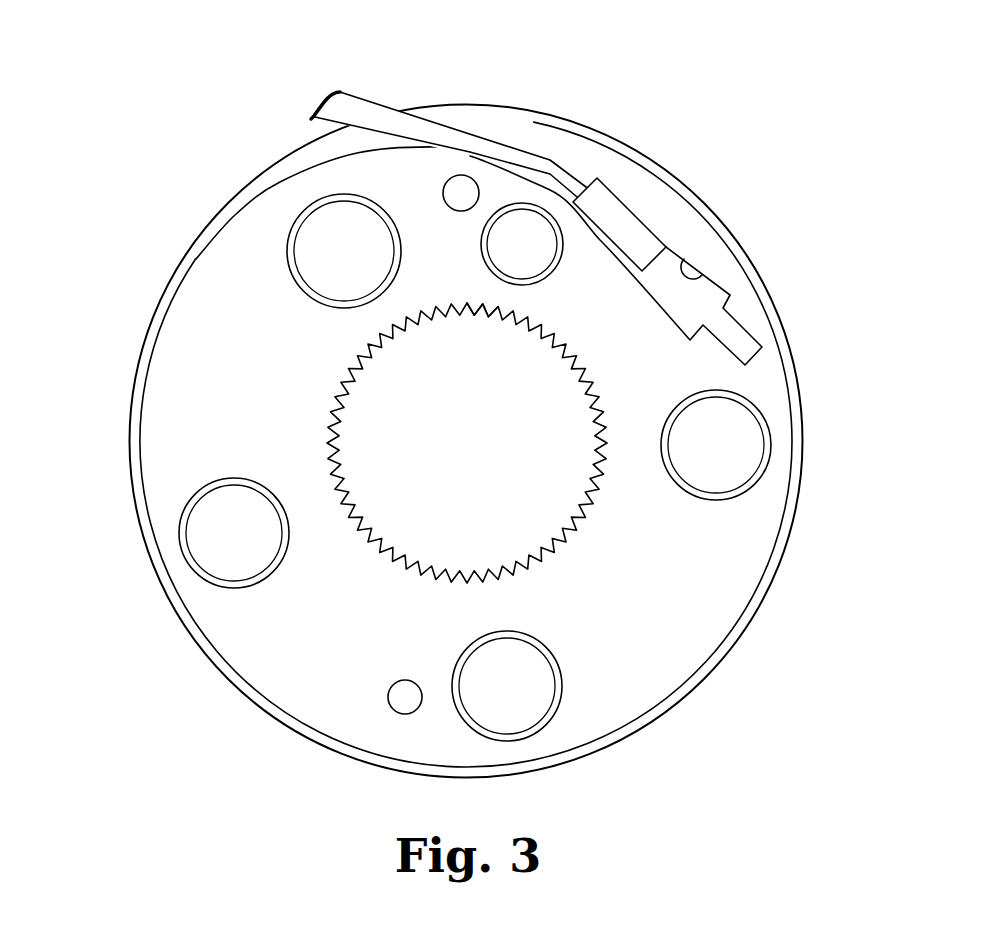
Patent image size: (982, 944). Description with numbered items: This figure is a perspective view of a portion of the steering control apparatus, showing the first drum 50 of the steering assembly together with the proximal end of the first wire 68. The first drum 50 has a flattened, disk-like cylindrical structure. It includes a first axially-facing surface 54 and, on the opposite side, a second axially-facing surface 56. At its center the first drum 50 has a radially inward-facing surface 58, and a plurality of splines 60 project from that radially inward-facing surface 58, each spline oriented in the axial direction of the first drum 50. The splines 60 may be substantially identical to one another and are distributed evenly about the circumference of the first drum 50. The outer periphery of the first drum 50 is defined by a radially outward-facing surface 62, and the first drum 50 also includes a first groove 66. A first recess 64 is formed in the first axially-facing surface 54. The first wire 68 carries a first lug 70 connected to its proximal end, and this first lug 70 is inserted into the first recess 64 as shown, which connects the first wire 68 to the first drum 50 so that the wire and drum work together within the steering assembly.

The first drum 50 is at (802, 375).
The first axially-facing surface 54 is at (205, 288).
The second axially-facing surface 56 is at (132, 386).
The radially inward-facing surface 58 is at (379, 340).
The splines 60 is at (568, 531).
The radially outward-facing surface 62 is at (258, 700).
The first recess 64 is at (701, 275).
The first groove 66 is at (282, 183).
The first wire 68 is at (396, 104).
The first lug 70 is at (612, 217).